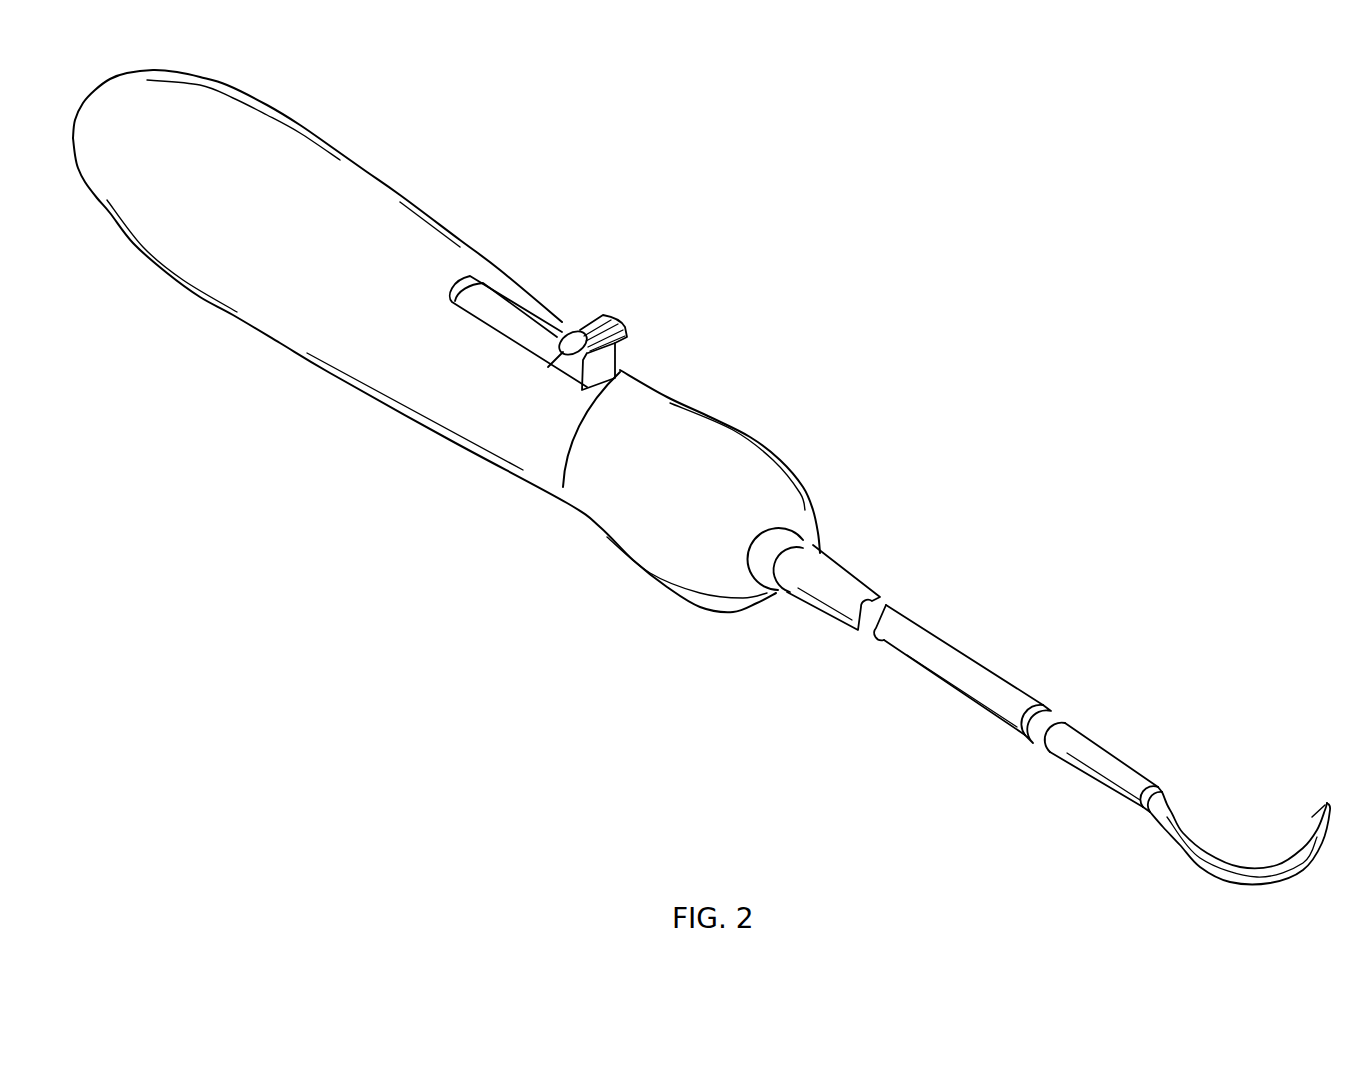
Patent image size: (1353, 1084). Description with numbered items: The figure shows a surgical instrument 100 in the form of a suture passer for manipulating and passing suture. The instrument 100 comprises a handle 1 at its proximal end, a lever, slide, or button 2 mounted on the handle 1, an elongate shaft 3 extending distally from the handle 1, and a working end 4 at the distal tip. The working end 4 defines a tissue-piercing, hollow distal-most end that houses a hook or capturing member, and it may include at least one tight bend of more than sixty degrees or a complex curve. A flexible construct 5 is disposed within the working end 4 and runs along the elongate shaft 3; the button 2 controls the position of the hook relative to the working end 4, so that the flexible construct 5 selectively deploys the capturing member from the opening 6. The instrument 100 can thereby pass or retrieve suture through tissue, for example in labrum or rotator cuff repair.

The surgical instrument 100 is at (881, 314).
The handle 1 is at (282, 350).
The button 2 is at (623, 322).
The elongate shaft 3 is at (987, 667).
The working end 4 is at (1272, 845).
The flexible construct 5 is at (887, 607).
The opening 6 is at (1313, 807).